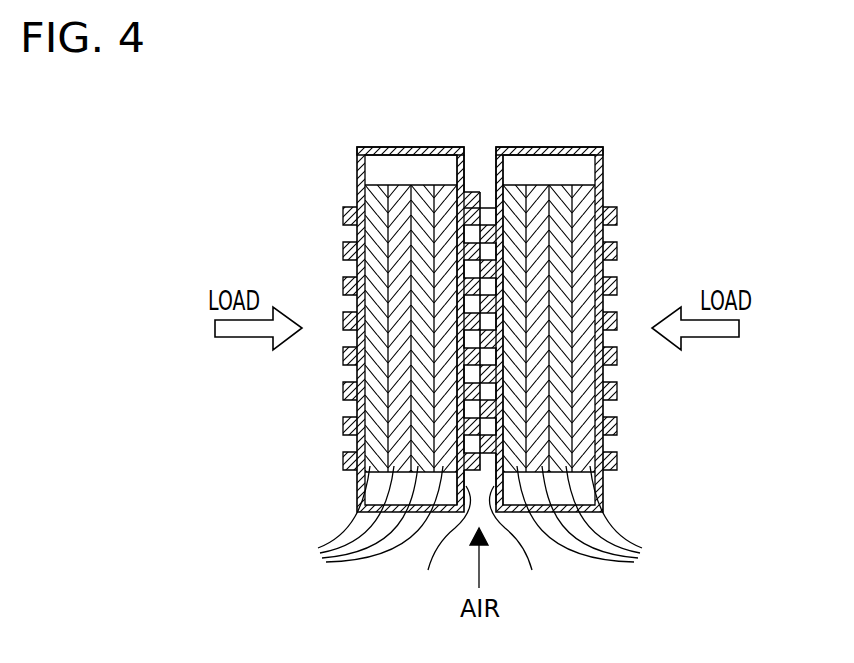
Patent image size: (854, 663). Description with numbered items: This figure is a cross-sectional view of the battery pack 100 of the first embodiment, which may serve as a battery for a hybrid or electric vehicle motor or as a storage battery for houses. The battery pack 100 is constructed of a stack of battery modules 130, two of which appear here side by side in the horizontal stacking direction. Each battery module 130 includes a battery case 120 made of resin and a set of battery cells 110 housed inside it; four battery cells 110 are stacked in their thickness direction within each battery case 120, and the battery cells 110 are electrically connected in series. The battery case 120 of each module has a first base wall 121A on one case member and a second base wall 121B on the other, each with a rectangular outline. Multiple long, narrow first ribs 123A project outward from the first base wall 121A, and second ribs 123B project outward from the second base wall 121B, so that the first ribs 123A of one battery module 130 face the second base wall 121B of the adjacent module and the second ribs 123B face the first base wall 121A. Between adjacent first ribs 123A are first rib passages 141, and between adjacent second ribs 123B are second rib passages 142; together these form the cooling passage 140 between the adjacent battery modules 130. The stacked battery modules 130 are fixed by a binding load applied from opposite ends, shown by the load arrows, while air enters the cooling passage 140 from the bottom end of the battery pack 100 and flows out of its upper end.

The battery pack 100 is at (477, 318).
The battery cell 110 is at (479, 516).
The battery case 120 is at (355, 493).
The first base wall 121A is at (433, 542).
The second base wall 121B is at (524, 542).
The first ribs 123A is at (460, 220).
The second ribs 123B is at (498, 248).
The battery module 130 is at (398, 142).
The cooling passage 140 is at (483, 254).
The first rib passages 141 is at (475, 217).
The second rib passages 142 is at (487, 235).